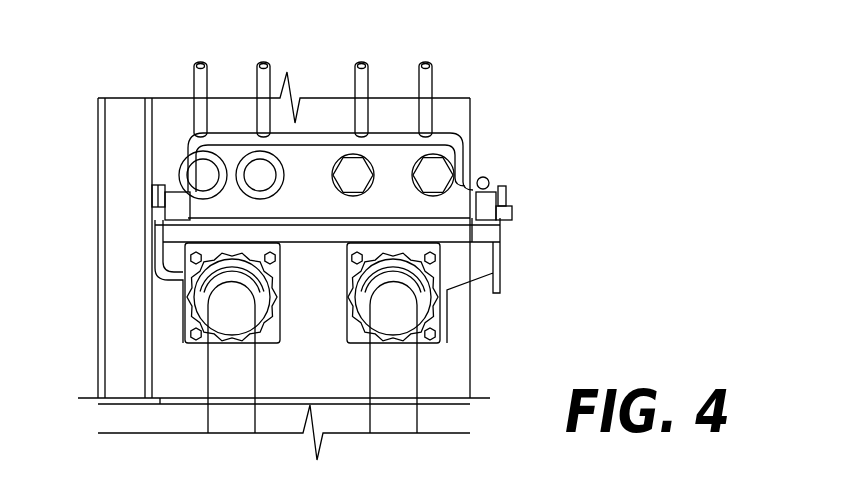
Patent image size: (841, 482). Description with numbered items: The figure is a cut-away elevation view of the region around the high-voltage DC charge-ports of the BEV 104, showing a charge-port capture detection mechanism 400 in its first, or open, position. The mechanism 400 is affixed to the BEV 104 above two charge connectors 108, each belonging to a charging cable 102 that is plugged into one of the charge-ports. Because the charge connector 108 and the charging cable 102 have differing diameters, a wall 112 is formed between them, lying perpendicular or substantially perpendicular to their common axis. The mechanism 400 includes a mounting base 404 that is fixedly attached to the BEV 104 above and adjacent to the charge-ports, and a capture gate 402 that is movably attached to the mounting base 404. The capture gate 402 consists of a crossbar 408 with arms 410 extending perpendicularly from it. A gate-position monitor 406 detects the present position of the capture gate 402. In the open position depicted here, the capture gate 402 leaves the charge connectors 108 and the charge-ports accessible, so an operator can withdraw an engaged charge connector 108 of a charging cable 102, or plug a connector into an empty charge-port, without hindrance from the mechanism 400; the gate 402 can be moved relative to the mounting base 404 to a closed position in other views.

The charge-port capture detection mechanism 400 is at (538, 193).
The capture gate 402 is at (186, 153).
The mounting base 404 is at (144, 218).
The gate-position monitor 406 is at (497, 175).
The crossbar 408 is at (297, 136).
The arms 410 is at (263, 62).
The BEV 104 is at (462, 115).
The charging cable 102 is at (225, 363).
The charge connector 108 is at (270, 308).
The wall 112 is at (200, 290).